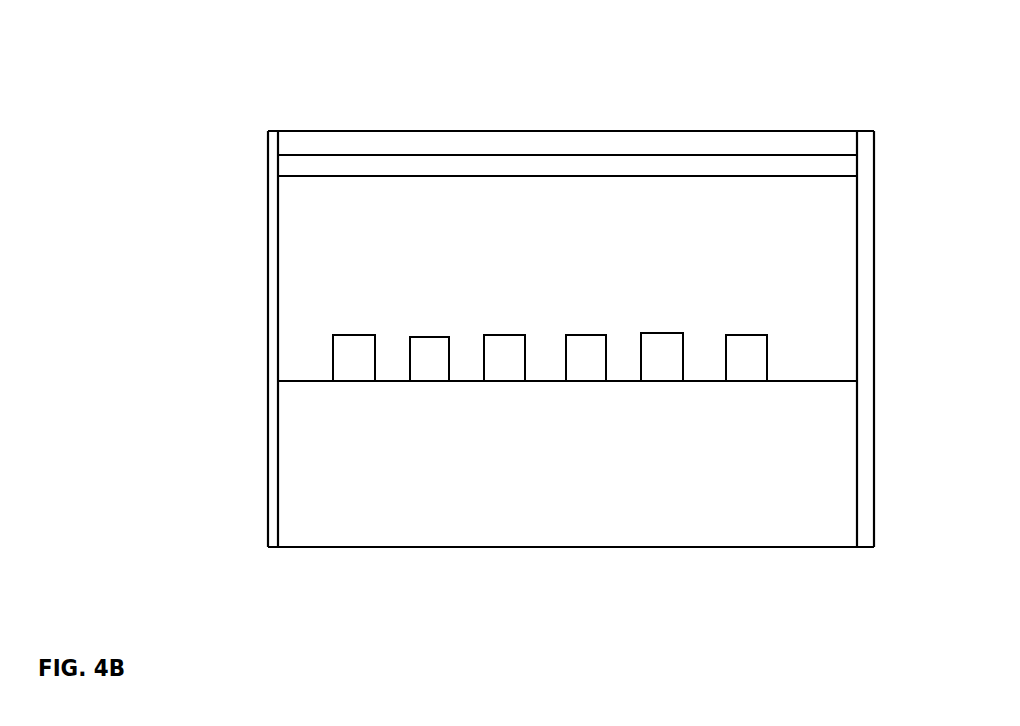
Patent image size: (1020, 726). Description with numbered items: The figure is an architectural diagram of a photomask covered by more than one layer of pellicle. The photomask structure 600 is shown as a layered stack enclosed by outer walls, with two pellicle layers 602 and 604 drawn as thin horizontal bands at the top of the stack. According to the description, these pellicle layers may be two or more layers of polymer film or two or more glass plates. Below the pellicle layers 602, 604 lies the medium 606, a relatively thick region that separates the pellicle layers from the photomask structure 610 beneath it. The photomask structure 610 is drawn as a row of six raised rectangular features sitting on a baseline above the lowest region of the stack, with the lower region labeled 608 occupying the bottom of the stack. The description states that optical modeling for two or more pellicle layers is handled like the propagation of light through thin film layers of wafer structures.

The photomask structure 600 is at (617, 70).
The pellicle layer 602 is at (567, 143).
The pellicle layer 604 is at (567, 166).
The medium 606 is at (567, 278).
The substrate layer 608 is at (567, 426).
The photomask structure 610 is at (327, 357).